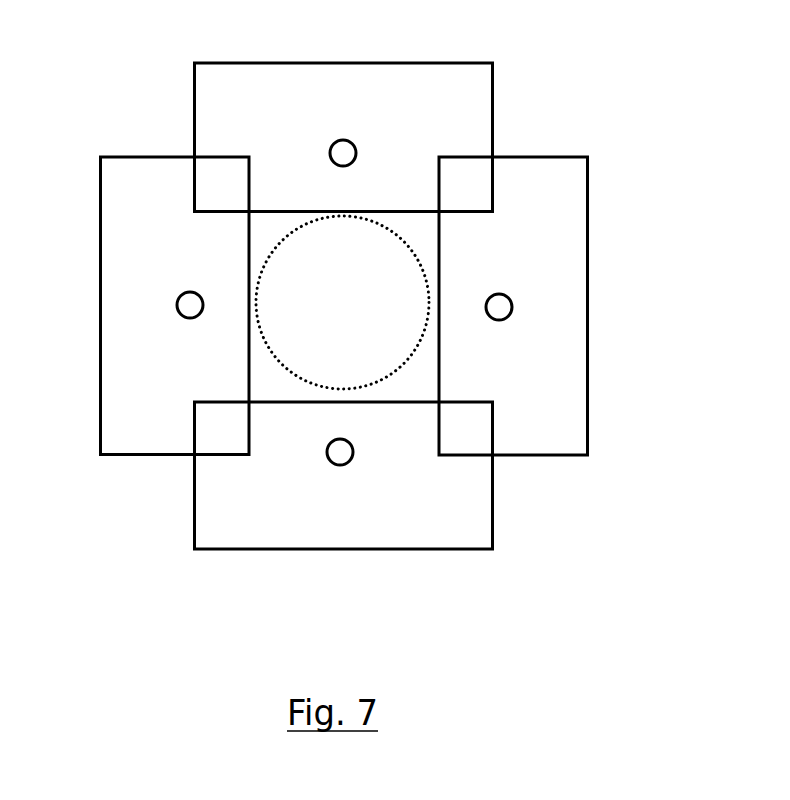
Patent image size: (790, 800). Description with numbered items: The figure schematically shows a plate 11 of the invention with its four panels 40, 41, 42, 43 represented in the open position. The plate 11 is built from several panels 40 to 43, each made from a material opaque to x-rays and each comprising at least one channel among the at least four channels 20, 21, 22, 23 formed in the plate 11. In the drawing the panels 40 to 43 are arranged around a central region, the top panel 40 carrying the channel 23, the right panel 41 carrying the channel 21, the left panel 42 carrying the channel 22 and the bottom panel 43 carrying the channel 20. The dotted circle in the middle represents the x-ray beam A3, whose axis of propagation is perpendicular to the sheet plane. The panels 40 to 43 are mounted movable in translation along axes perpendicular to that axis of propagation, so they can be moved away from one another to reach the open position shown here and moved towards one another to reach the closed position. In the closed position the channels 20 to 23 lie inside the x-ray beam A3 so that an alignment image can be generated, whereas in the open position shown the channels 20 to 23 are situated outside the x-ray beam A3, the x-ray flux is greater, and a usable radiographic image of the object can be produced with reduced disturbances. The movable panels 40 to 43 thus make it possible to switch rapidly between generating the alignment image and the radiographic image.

The plate 11 is at (590, 118).
The channel 20 is at (338, 464).
The channel 21 is at (495, 312).
The channel 22 is at (177, 297).
The channel 23 is at (338, 142).
The panel 40 is at (468, 88).
The panel 41 is at (570, 232).
The panel 42 is at (125, 213).
The panel 43 is at (476, 532).
The x-ray beam A3 is at (425, 277).